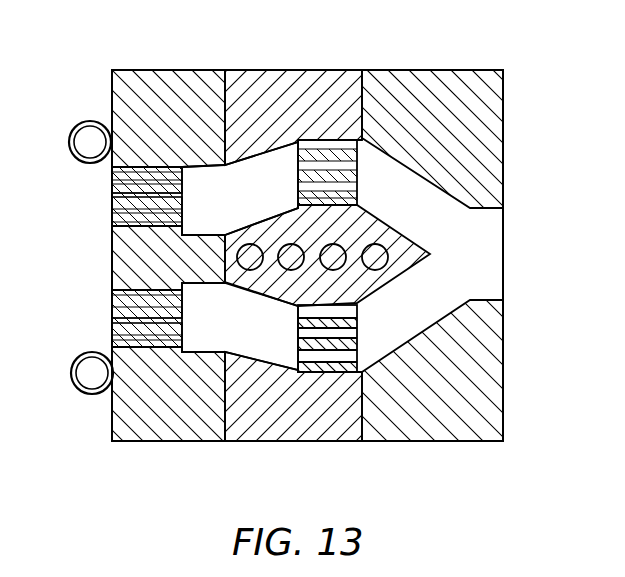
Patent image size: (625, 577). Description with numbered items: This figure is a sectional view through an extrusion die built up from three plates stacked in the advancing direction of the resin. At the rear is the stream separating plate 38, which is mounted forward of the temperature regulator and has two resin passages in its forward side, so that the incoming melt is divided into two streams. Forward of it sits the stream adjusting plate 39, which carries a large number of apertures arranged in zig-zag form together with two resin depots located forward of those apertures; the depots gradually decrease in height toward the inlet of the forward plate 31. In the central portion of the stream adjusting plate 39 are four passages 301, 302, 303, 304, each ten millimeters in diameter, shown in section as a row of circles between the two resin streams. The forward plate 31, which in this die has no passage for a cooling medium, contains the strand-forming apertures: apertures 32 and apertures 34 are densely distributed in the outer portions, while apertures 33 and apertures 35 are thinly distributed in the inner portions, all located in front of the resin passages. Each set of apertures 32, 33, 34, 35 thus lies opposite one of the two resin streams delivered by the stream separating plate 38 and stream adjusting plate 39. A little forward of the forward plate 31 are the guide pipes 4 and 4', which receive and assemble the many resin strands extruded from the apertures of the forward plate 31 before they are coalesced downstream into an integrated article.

The forward plate 31 is at (190, 78).
The guide pipe 4 is at (77, 127).
The guide pipe 4' is at (70, 373).
The apertures 32 is at (112, 171).
The apertures 33 is at (112, 197).
The apertures 34 is at (112, 342).
The apertures 35 is at (112, 305).
The stream adjusting plate 39 is at (320, 163).
The stream separating plate 38 is at (460, 386).
The passage 301 is at (374, 252).
The passage 302 is at (336, 255).
The passage 303 is at (291, 250).
The passage 304 is at (250, 255).